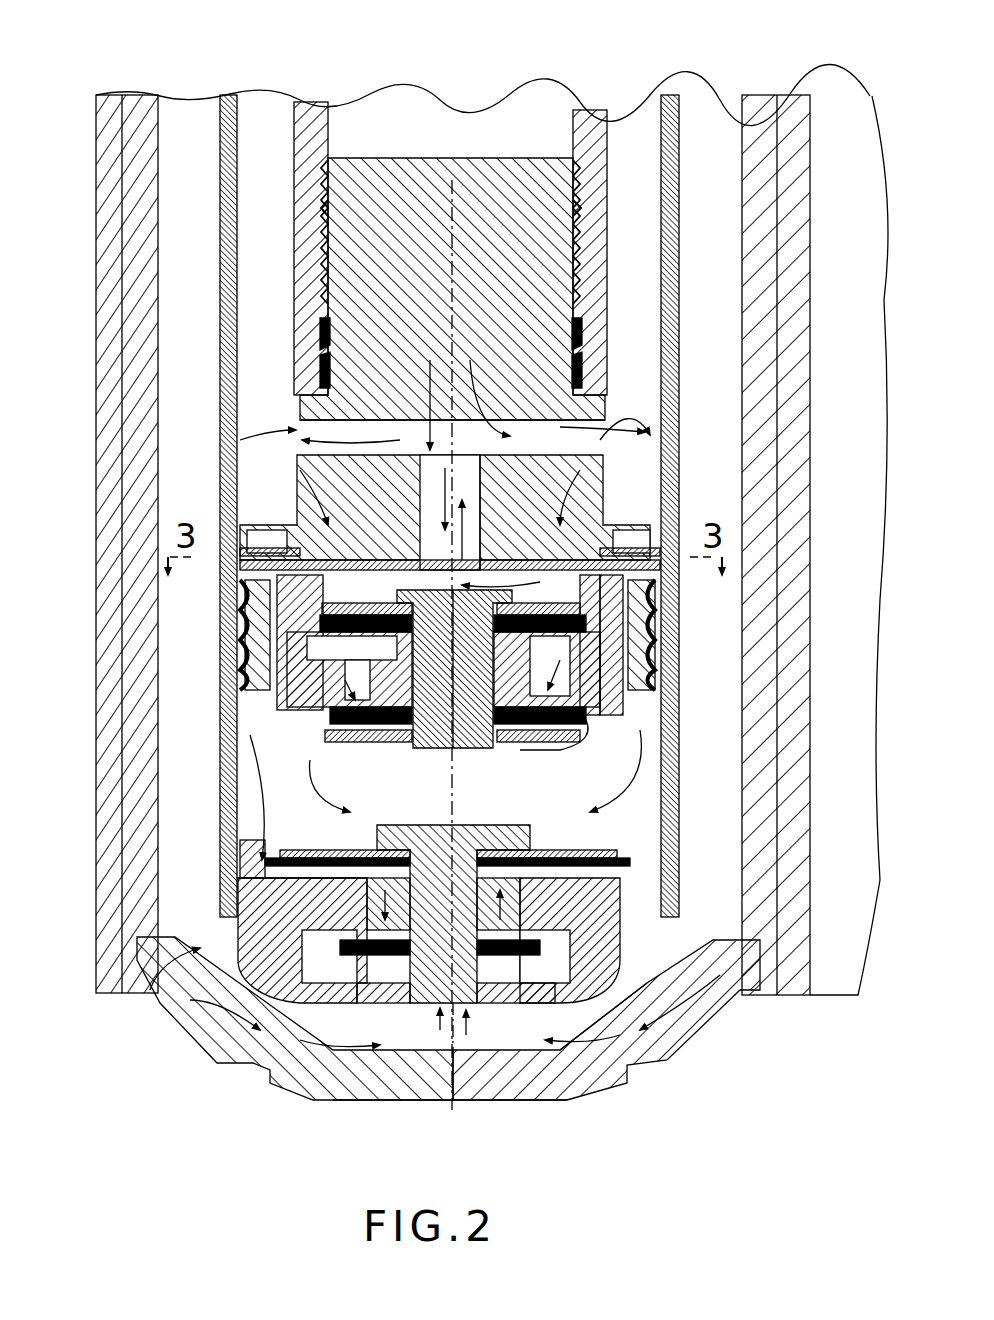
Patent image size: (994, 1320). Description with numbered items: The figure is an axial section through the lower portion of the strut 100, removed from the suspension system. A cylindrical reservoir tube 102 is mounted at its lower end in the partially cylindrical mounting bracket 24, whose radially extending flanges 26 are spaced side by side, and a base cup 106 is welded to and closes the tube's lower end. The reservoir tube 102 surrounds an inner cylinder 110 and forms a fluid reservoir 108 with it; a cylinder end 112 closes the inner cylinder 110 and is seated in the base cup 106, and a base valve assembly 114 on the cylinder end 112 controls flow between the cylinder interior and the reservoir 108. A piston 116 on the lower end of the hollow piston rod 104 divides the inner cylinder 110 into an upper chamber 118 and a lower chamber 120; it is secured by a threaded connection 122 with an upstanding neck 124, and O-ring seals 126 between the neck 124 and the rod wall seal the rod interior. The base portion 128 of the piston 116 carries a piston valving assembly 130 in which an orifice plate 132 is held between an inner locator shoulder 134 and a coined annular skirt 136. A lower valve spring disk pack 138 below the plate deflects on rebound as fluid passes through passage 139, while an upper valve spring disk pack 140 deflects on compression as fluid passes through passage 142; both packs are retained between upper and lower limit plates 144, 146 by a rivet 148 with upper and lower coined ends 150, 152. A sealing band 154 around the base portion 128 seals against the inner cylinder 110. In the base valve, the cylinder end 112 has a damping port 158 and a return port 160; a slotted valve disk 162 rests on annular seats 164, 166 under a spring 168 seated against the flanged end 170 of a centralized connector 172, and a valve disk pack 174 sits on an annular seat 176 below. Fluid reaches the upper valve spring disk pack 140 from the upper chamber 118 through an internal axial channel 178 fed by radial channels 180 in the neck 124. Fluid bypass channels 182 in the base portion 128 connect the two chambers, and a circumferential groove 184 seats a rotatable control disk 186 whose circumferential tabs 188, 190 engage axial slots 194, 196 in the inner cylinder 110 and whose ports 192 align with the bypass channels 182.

The mounting bracket 24 is at (100, 836).
The flanges 26 is at (830, 945).
The strut 100 is at (205, 1065).
The reservoir tube 102 is at (141, 112).
The piston rod 104 is at (328, 110).
The base cup 106 is at (325, 1082).
The fluid reservoir 108 is at (183, 257).
The inner cylinder 110 is at (237, 103).
The cylinder end 112 is at (712, 1045).
The base valve assembly 114 is at (470, 1105).
The piston 116 is at (392, 152).
The upper chamber 118 is at (668, 108).
The lower chamber 120 is at (790, 812).
The threaded connection 122 is at (588, 222).
The neck 124 is at (512, 170).
The O-ring seals 126 is at (582, 342).
The base portion 128 is at (575, 466).
The piston valving assembly 130 is at (447, 756).
The orifice plate 132 is at (262, 750).
The inner locator shoulder 134 is at (600, 666).
The annular skirt 136 is at (648, 724).
The lower valve spring disk pack 138 is at (590, 737).
The passage 139 is at (362, 735).
The upper valve spring disk pack 140 is at (583, 602).
The passage 142 is at (590, 752).
The upper limit plate 144 is at (355, 605).
The lower limit plate 146 is at (345, 722).
The rivet 148 is at (470, 756).
The upper coined end 150 is at (505, 596).
The lower coined end 152 is at (538, 740).
The sealing band 154 is at (238, 622).
The damping port 158 is at (420, 1010).
The return port 160 is at (652, 896).
The slotted valve disk 162 is at (247, 832).
The annular seat 164 is at (336, 856).
The annular seat 166 is at (242, 878).
The spring 168 is at (637, 844).
The flanged end 170 is at (356, 812).
The connector 172 is at (445, 1100).
The valve disk pack 174 is at (605, 1063).
The annular seat 176 is at (312, 990).
The internal axial channel 178 is at (428, 422).
The radial channels 180 is at (238, 438).
The fluid bypass channels 182 is at (640, 700).
The circumferential groove 184 is at (580, 470).
The control disk 186 is at (298, 470).
The circumferential tab 188 is at (645, 560).
The circumferential tab 190 is at (240, 548).
The ports 192 is at (272, 556).
The axial slot 194 is at (240, 262).
The axial slot 196 is at (663, 262).